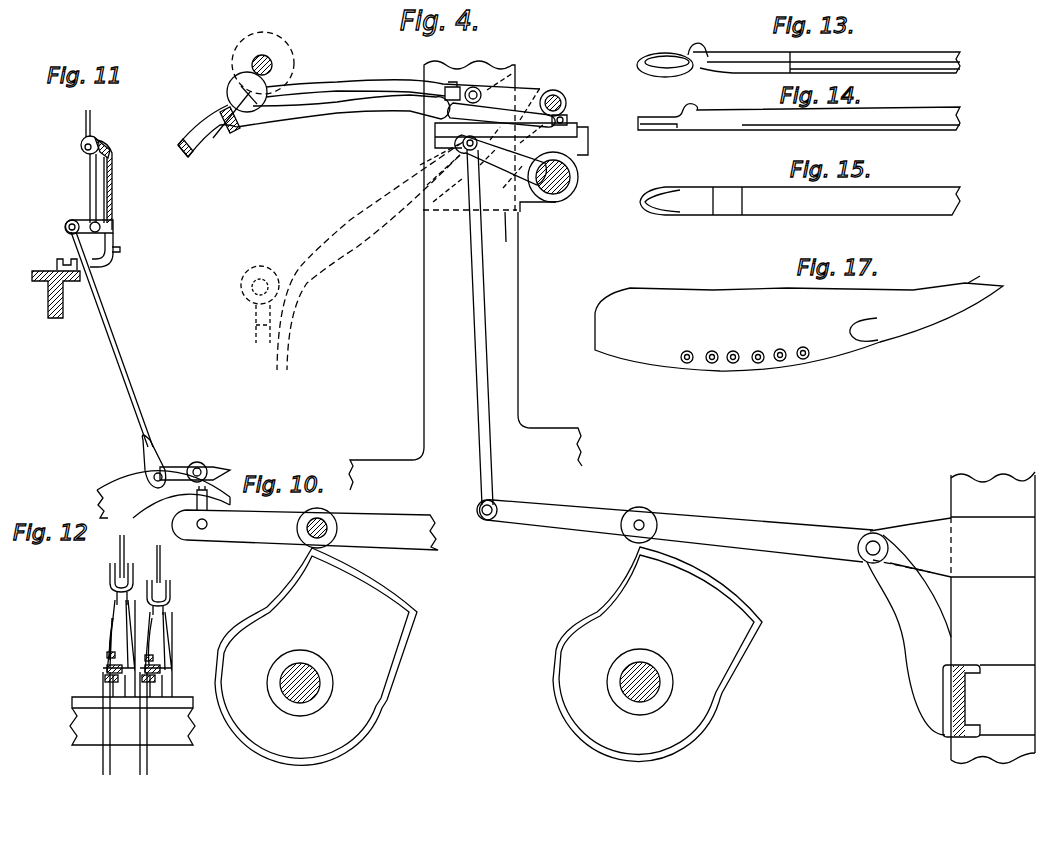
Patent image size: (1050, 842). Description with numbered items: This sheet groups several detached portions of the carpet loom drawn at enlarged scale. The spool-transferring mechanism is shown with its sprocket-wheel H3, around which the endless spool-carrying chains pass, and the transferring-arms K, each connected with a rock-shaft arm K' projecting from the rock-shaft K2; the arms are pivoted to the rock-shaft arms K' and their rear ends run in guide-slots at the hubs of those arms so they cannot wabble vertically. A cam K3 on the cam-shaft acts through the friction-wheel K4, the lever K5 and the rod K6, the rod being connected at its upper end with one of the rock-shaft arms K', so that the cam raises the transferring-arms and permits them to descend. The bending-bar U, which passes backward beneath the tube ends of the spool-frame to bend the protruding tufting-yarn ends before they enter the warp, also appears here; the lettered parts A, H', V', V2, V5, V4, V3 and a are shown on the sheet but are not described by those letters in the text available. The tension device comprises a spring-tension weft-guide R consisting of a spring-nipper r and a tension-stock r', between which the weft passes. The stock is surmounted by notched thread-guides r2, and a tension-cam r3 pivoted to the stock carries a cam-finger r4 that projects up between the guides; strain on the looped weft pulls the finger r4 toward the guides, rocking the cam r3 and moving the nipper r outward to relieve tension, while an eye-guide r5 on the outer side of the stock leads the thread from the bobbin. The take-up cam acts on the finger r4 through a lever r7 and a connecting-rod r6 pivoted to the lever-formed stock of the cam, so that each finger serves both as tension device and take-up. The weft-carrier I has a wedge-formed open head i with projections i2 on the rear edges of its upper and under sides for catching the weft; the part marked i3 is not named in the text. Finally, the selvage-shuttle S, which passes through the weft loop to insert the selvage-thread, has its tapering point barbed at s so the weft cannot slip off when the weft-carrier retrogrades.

In FIG. 4, the frame A is at (432, 314).
In FIG. 4, the hand lever H' is at (316, 221).
In FIG. 4, the sprocket-wheel H3 is at (295, 60).
In FIG. 4, the bending-bar U is at (207, 134).
In FIG. 4, the transferring-arm K is at (343, 111).
In FIG. 4, the lever arm V' is at (403, 86).
In FIG. 4, the pivot stud V2 is at (568, 104).
In FIG. 4, the rock-shaft arm K' is at (511, 144).
In FIG. 4, the rock-shaft K2 is at (579, 178).
In FIG. 4, the rod K6 is at (447, 395).
In FIG. 4, the bracket V5 is at (499, 229).
In FIG. 10, the bracket V5 is at (213, 498).
In FIG. 4, the friction-wheel K4 is at (675, 517).
In FIG. 4, the lever K5 is at (831, 626).
In FIG. 4, the cam K3 is at (650, 612).
In FIG. 4, the shaft a is at (640, 682).
In FIG. 10, the shaft a is at (300, 683).
In FIG. 10, the lever V4 is at (305, 529).
In FIG. 10, the cam V3 is at (316, 656).
In FIG. 11, the cam-finger r4 is at (84, 125).
In FIG. 12, the cam-finger r4 is at (116, 544).
In FIG. 11, the notched thread-guides r2 is at (112, 148).
In FIG. 12, the notched thread-guides r2 is at (182, 590).
In FIG. 11, the spring-nipper r is at (105, 227).
In FIG. 12, the spring-nipper r is at (133, 669).
In FIG. 11, the spring-tension weft-guide R is at (120, 237).
In FIG. 12, the spring-tension weft-guide R is at (94, 684).
In FIG. 11, the tension-stock r' is at (98, 250).
In FIG. 12, the tension-stock r' is at (136, 648).
In FIG. 11, the eye-guide r5 is at (120, 256).
In FIG. 12, the eye-guide r5 is at (136, 683).
In FIG. 11, the connecting-rod r6 is at (118, 360).
In FIG. 12, the connecting-rod r6 is at (124, 723).
In FIG. 11, the lever r7 is at (164, 483).
In FIG. 12, the tension-cam r3 is at (106, 652).
In FIG. 13, the weft-carrier I is at (915, 50).
In FIG. 14, the weft-carrier I is at (799, 117).
In FIG. 15, the weft-carrier I is at (800, 202).
In FIG. 13, the open head i is at (663, 52).
In FIG. 14, the open head i is at (663, 120).
In FIG. 15, the open head i is at (670, 201).
In FIG. 13, the projection i2 is at (696, 42).
In FIG. 14, the projection i2 is at (690, 104).
In FIG. 15, the projection i2 is at (691, 186).
In FIG. 13, the loop i3 is at (648, 45).
In FIG. 15, the loop i3 is at (656, 186).
In FIG. 17, the selvage-shuttle S is at (799, 327).
In FIG. 17, the barb s is at (974, 274).